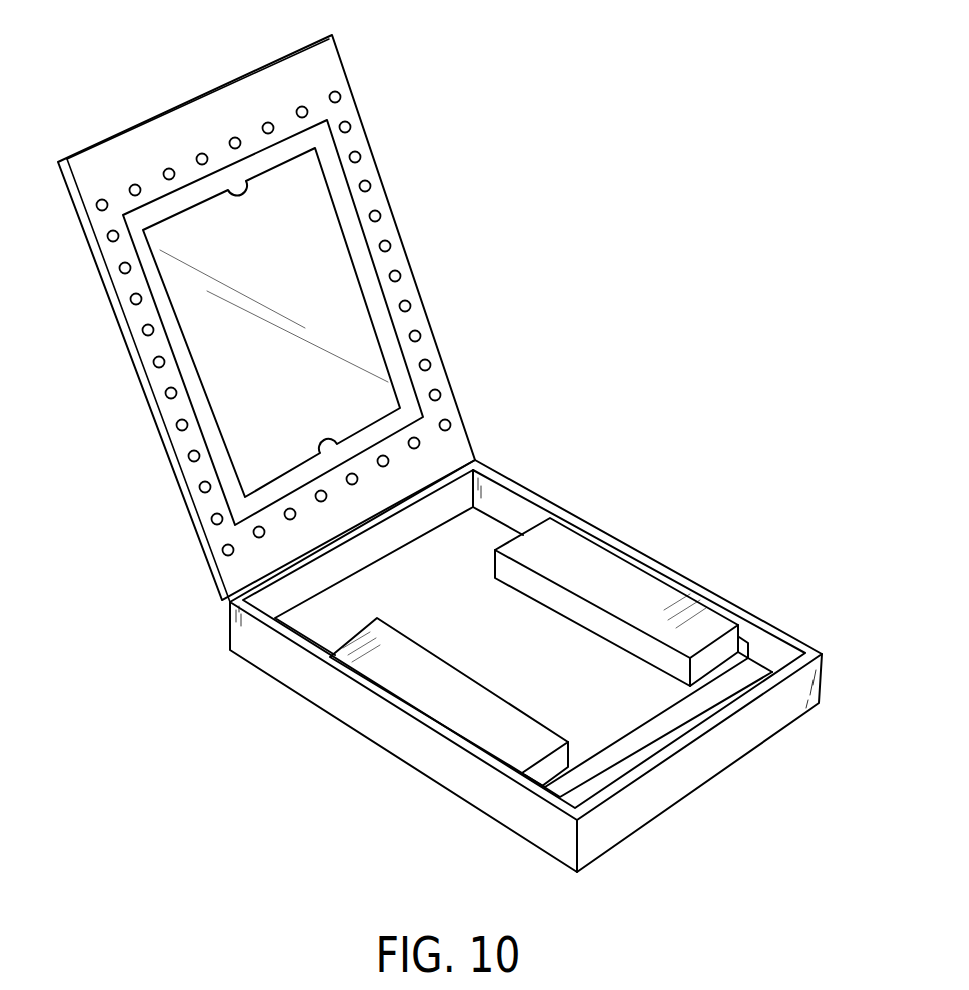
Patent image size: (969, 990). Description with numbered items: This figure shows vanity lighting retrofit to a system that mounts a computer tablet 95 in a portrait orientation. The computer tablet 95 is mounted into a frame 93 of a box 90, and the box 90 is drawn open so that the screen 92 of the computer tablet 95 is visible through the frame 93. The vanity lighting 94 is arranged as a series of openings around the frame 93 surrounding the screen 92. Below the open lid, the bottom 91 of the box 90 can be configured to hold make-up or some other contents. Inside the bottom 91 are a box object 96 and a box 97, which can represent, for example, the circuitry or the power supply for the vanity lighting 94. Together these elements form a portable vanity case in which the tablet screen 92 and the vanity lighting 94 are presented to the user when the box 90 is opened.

The box 90 is at (531, 401).
The bottom of box 91 is at (778, 727).
The screen 92 is at (292, 254).
The frame 93 is at (297, 44).
The vanity lighting 94 is at (300, 106).
The computer tablet 95 is at (167, 168).
The box object 96 is at (580, 556).
The box 97 is at (418, 660).